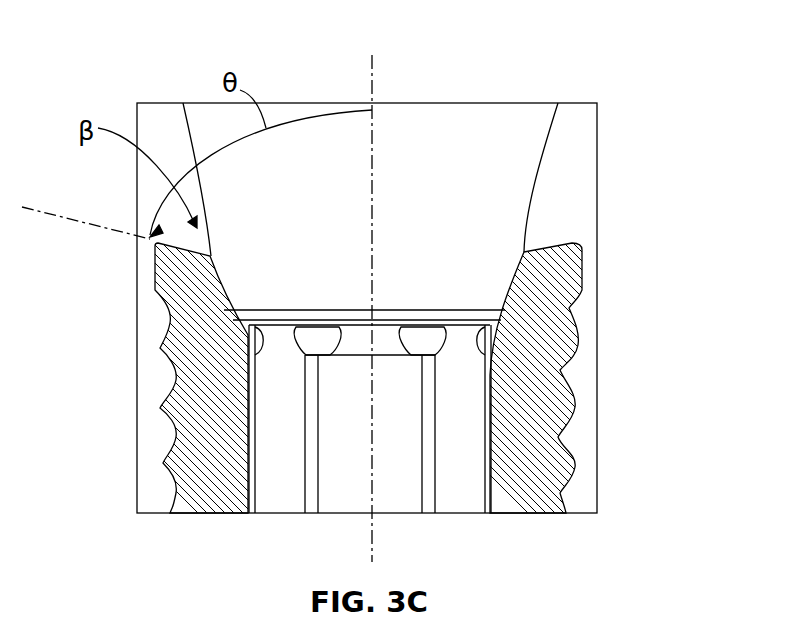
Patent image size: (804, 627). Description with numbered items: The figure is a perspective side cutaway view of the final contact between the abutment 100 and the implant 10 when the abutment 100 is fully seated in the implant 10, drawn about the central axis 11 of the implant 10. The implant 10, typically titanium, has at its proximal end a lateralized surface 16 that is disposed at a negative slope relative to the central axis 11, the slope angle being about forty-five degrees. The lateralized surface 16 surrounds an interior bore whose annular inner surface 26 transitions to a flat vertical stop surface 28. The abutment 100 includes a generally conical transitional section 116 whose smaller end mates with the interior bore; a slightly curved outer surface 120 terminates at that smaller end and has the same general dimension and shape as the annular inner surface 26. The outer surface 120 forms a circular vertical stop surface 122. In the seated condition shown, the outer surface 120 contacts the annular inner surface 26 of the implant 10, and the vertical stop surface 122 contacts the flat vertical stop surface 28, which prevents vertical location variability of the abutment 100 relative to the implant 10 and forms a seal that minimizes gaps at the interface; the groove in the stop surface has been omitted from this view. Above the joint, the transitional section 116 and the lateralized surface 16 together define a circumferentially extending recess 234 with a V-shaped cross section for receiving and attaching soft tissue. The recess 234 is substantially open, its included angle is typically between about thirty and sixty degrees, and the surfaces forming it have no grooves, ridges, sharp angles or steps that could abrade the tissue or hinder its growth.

The implant 10 is at (122, 368).
The central axis 11 is at (371, 528).
The lateralized surface 16 is at (580, 243).
The annular inner surface 26 is at (508, 309).
The flat vertical stop surface 28 is at (489, 398).
The abutment 100 is at (503, 89).
The transitional section 116 is at (540, 157).
The outer surface 120 is at (523, 275).
The circular vertical stop surface 122 is at (492, 316).
The circumferentially extending recess 234 is at (195, 243).